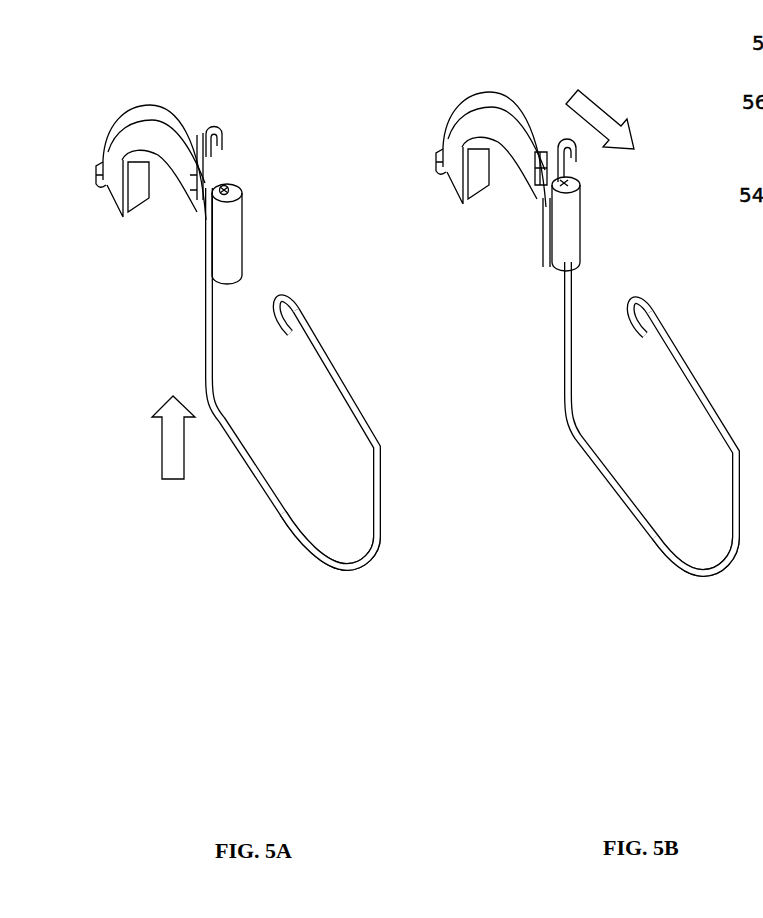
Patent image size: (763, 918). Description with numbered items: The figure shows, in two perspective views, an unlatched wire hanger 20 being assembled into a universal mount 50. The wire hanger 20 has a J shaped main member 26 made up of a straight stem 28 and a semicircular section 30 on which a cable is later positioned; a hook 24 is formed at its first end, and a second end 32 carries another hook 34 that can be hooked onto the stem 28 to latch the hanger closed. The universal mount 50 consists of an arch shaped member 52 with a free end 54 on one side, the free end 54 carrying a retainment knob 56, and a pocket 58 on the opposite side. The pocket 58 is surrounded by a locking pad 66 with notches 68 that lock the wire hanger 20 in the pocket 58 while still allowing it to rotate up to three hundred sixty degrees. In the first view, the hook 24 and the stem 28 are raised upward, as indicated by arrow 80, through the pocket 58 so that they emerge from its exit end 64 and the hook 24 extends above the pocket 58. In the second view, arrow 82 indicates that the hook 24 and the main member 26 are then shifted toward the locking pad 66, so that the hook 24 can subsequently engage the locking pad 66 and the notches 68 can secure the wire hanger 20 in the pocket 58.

In FIG. 5A, the wire hanger 20 is at (266, 411).
In FIG. 5B, the wire hanger 20 is at (624, 452).
In FIG. 5A, the hook 24 is at (218, 140).
In FIG. 5B, the hook 24 is at (577, 150).
In FIG. 5A, the J shaped main member 26 is at (270, 518).
In FIG. 5B, the J shaped main member 26 is at (630, 520).
In FIG. 5A, the stem 28 is at (205, 317).
In FIG. 5B, the stem 28 is at (562, 344).
In FIG. 5A, the semicircular section 30 is at (348, 574).
In FIG. 5B, the semicircular section 30 is at (707, 580).
In FIG. 5A, the second end 32 is at (333, 360).
In FIG. 5B, the second end 32 is at (690, 365).
In FIG. 5A, the hook 34 is at (300, 305).
In FIG. 5B, the hook 34 is at (652, 318).
In FIG. 5A, the universal mount 50 is at (150, 138).
In FIG. 5B, the universal mount 50 is at (517, 131).
In FIG. 5A, the arch shaped member 52 is at (160, 113).
In FIG. 5B, the arch shaped member 52 is at (494, 120).
In FIG. 5A, the free end 54 is at (107, 200).
In FIG. 5B, the free end 54 is at (434, 188).
In FIG. 5A, the retainment knob 56 is at (100, 168).
In FIG. 5B, the retainment knob 56 is at (416, 142).
In FIG. 5A, the pocket 58 is at (188, 165).
In FIG. 5B, the pocket 58 is at (541, 150).
In FIG. 5A, the exit end 64 is at (232, 186).
In FIG. 5A, the locking pad 66 is at (267, 198).
In FIG. 5B, the locking pad 66 is at (572, 224).
In FIG. 5A, the notches 68 is at (224, 185).
In FIG. 5B, the notches 68 is at (550, 185).
In FIG. 5A, the arrow 80 is at (172, 457).
In FIG. 5B, the arrow 82 is at (597, 113).